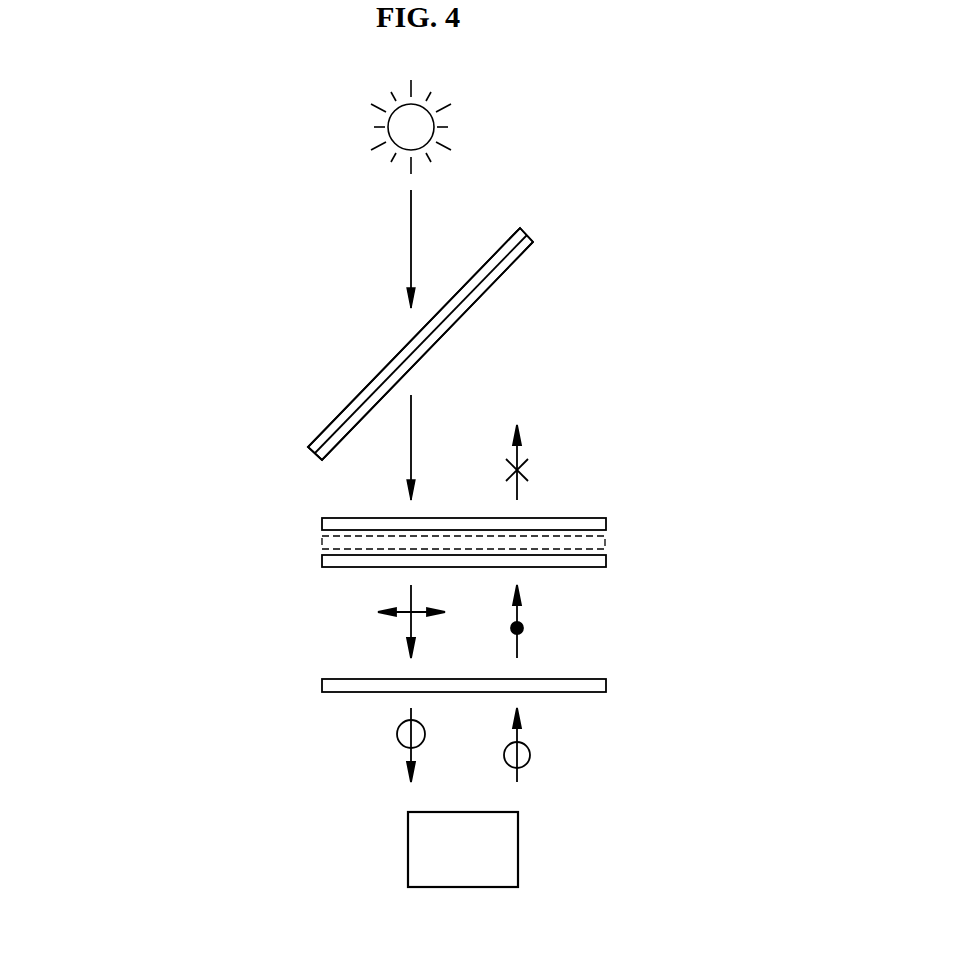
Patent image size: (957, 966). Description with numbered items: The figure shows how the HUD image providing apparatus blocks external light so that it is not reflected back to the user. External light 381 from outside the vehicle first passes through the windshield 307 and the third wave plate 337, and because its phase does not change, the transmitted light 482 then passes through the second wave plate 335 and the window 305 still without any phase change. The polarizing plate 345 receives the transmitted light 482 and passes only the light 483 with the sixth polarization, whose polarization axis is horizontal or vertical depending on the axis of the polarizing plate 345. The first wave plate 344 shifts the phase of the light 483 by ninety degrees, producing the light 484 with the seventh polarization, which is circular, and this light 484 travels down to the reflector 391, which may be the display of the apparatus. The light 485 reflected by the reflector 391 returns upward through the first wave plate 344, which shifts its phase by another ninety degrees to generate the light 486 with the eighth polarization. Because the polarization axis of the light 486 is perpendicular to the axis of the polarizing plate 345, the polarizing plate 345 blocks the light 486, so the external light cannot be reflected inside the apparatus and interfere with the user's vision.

The external light 381 is at (410, 248).
The third wave plate 337 is at (512, 268).
The windshield 307 is at (344, 415).
The transmitted light 482 is at (412, 422).
The second wave plate 335 is at (322, 524).
The window 305 is at (606, 541).
The polarizing plate 345 is at (322, 560).
The light with a sixth polarization 483 is at (410, 601).
The light with an eighth polarization 486 is at (519, 617).
The first wave plate 344 is at (322, 685).
The light with a seventh polarization 484 is at (410, 755).
The reflected light 485 is at (519, 740).
The reflector 391 is at (518, 847).